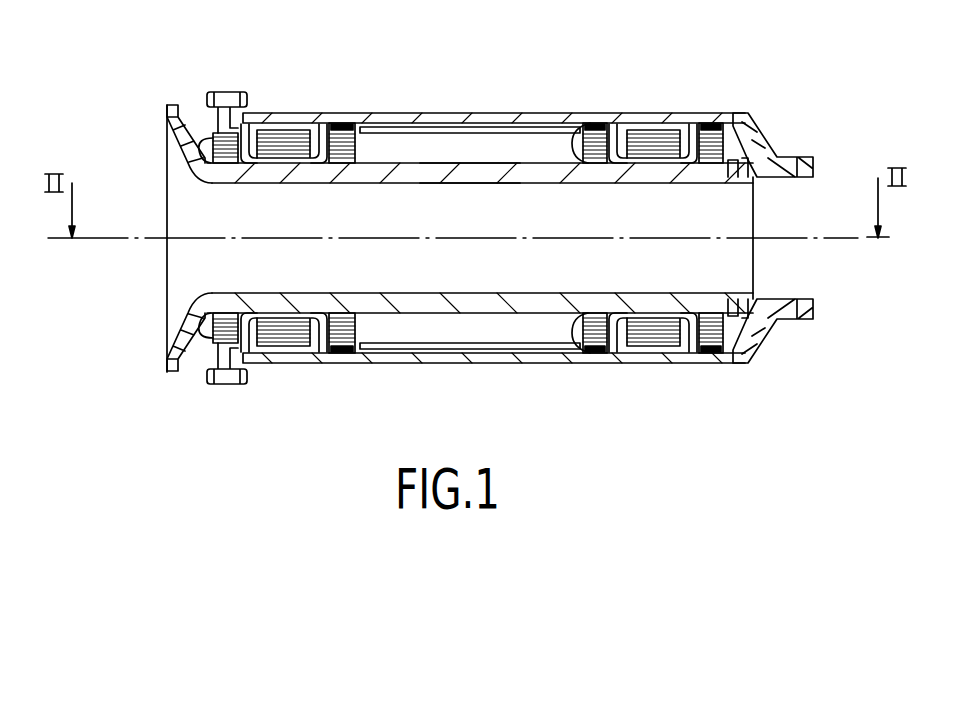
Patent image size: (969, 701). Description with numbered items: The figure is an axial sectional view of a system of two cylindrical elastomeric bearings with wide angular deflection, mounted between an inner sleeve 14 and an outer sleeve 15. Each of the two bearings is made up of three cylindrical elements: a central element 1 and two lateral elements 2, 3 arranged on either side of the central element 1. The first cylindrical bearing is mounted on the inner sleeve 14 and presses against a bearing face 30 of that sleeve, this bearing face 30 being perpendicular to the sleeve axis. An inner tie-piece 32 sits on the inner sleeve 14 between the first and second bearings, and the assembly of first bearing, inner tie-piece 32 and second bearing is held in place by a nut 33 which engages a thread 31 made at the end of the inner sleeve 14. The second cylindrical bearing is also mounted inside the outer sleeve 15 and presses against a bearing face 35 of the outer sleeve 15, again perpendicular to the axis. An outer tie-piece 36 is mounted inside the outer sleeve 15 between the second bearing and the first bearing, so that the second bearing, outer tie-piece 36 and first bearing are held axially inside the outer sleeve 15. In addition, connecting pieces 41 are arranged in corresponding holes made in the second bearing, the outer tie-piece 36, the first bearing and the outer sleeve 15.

The central element 1 is at (292, 124).
The lateral element 2 is at (213, 144).
The lateral element 3 is at (357, 142).
The inner sleeve 14 is at (462, 178).
The outer sleeve 15 is at (414, 352).
The bearing face 30 is at (255, 167).
The thread 31 is at (752, 192).
The inner tie-piece 32 is at (507, 168).
The nut 33 is at (752, 143).
The bearing face 35 is at (716, 348).
The outer tie-piece 36 is at (504, 350).
The connecting piece 41 is at (343, 127).